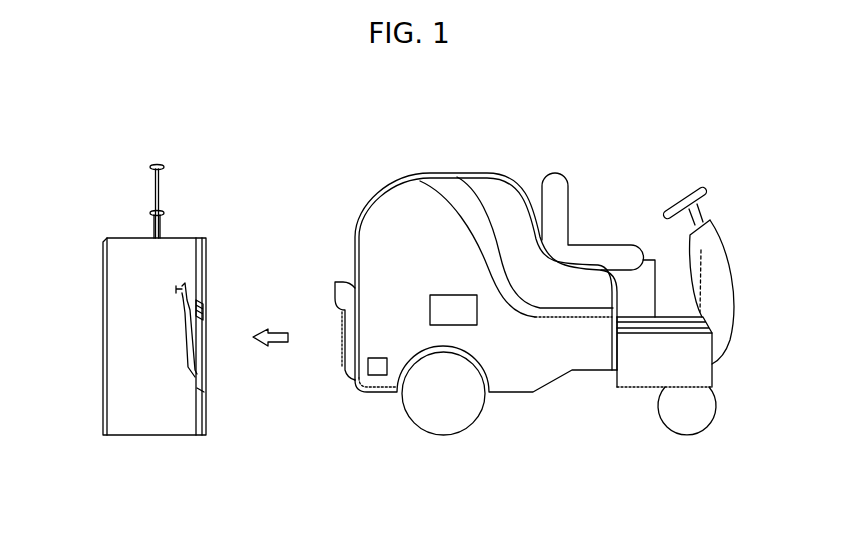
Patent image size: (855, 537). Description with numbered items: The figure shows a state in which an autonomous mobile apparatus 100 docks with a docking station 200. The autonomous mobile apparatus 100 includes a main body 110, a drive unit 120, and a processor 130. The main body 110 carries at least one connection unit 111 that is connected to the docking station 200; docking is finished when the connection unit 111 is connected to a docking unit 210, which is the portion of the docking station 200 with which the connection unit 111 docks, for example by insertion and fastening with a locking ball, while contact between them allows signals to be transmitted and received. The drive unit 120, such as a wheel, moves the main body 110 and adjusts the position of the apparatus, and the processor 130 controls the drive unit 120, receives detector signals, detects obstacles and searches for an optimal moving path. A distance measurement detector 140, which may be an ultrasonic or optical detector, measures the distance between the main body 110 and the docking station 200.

The autonomous mobile apparatus 100 is at (496, 299).
The main body 110 is at (557, 360).
The connection unit 111 is at (352, 323).
The drive unit 120 is at (447, 417).
The processor 130 is at (443, 300).
The distance measurement detector 140 is at (378, 376).
The docking station 200 is at (125, 214).
The docking unit 210 is at (203, 362).